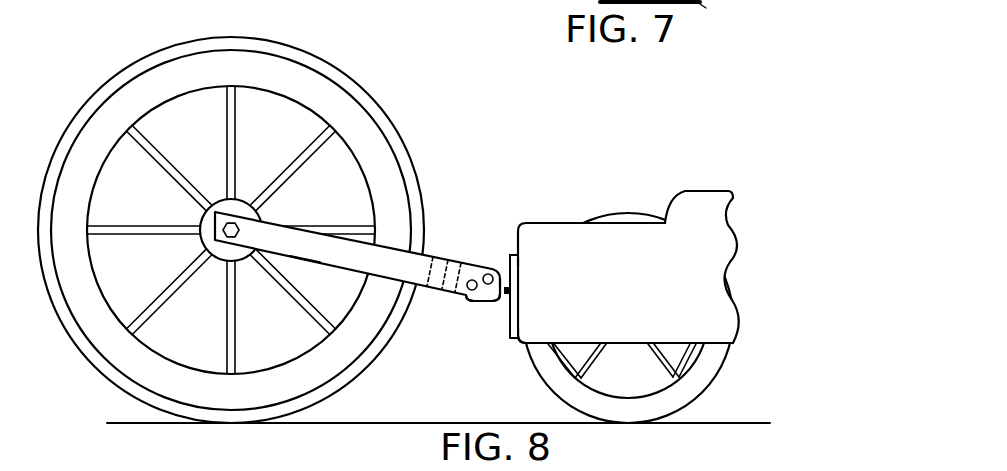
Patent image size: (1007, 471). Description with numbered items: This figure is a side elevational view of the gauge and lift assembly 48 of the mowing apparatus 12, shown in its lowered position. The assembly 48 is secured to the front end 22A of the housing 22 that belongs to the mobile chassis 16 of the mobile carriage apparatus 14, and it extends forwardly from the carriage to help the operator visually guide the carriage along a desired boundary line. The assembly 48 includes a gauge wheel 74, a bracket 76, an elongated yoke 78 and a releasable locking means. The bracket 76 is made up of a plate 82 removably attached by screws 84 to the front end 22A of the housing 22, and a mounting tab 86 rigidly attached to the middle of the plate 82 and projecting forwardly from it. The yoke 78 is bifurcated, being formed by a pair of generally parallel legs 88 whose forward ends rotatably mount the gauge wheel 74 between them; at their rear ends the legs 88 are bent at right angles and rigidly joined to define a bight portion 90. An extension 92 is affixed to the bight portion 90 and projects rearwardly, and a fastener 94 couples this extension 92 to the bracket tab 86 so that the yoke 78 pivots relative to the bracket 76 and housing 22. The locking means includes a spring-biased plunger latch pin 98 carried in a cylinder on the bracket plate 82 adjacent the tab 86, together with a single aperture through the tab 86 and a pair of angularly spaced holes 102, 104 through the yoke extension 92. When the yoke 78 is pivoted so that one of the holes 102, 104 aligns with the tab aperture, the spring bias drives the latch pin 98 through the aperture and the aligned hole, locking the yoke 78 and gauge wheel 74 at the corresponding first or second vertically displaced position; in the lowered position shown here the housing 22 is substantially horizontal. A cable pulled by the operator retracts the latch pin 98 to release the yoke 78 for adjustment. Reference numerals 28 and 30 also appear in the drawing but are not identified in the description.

In FIG. 8, the mowing apparatus 12 is at (527, 117).
In FIG. 8, the mobile carriage apparatus 14 is at (723, 187).
In FIG. 8, the mobile chassis 16 is at (637, 262).
In FIG. 8, the housing 22 is at (630, 220).
In FIG. 8, the front end 22A is at (519, 345).
In FIG. 7, the arrow 28 is at (706, 8).
In FIG. 7, the rear wheel 30 is at (773, 6).
In FIG. 8, the rear wheel 30 is at (719, 366).
In FIG. 8, the gauge and lift assembly 48 is at (529, 198).
In FIG. 8, the gauge wheel 74 is at (236, 36).
In FIG. 8, the bracket 76 is at (521, 313).
In FIG. 8, the elongated yoke 78 is at (426, 238).
In FIG. 8, the plate 82 is at (519, 262).
In FIG. 8, the screws 84 is at (504, 291).
In FIG. 8, the mounting tab 86 is at (509, 254).
In FIG. 8, the legs 88 is at (302, 258).
In FIG. 8, the bight portion 90 is at (435, 256).
In FIG. 8, the extension 92 is at (418, 290).
In FIG. 8, the fastener 94 is at (460, 303).
In FIG. 8, the plunger latch pin 98 is at (485, 266).
In FIG. 8, the hole 102 is at (500, 282).
In FIG. 8, the hole 104 is at (477, 304).